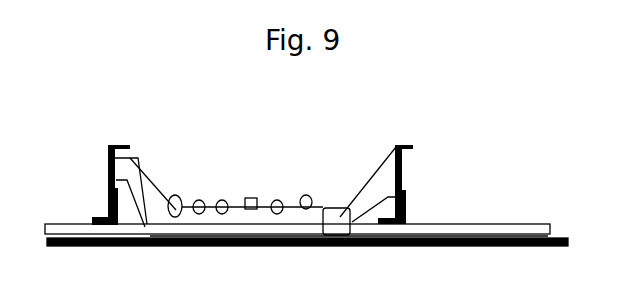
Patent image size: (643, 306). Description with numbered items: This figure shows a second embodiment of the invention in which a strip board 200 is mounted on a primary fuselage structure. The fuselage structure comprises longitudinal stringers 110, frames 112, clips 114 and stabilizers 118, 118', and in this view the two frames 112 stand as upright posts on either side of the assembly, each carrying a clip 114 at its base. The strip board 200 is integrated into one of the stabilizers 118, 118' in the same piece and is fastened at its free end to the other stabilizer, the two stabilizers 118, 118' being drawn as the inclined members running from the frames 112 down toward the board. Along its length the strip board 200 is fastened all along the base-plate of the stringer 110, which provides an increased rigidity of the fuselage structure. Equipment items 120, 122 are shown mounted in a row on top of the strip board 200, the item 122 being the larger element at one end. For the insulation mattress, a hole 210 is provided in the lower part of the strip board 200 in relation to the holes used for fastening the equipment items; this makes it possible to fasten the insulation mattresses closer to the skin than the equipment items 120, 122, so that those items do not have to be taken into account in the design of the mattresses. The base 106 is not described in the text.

The base 106 is at (570, 243).
The longitudinal stringer 110 is at (552, 228).
The frame 112 is at (110, 146).
The clip 114 is at (108, 212).
The stabilizer 118 is at (159, 176).
The stabilizer 118' is at (359, 157).
The equipment item 120 is at (193, 197).
The equipment item 122 is at (174, 195).
The strip board 200 is at (232, 230).
The hole 210 is at (248, 197).